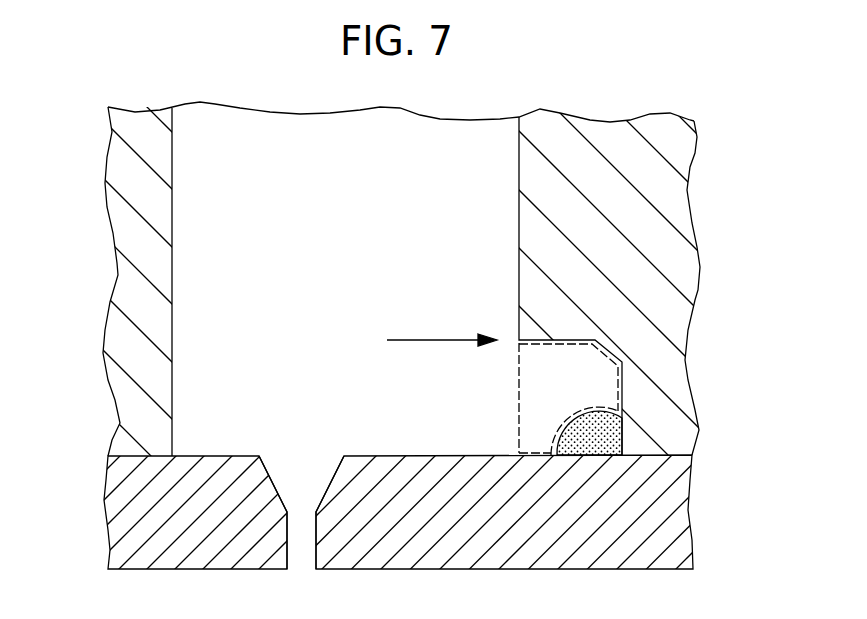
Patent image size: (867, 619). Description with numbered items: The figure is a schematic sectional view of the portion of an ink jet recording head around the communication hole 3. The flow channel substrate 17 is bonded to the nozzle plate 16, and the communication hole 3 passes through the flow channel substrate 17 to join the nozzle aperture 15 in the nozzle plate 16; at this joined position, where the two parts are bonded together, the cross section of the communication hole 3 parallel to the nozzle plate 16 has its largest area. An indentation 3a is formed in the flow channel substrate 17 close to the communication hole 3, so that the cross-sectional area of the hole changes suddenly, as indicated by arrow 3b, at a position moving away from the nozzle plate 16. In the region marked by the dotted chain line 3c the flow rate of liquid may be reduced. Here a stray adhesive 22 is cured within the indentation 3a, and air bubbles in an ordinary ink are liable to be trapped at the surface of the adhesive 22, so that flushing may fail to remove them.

The communication hole 3 is at (257, 142).
The indentation 3a is at (523, 388).
The arrow 3b is at (423, 339).
The region indicated by dotted chain line 3c is at (518, 421).
The nozzle aperture 15 is at (268, 477).
The nozzle plate 16 is at (128, 500).
The flow channel substrate 17 is at (130, 292).
The stray adhesive 22 is at (602, 440).